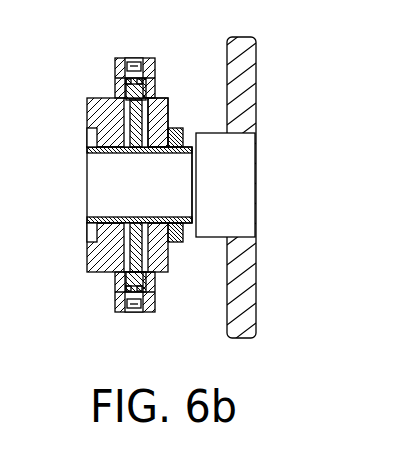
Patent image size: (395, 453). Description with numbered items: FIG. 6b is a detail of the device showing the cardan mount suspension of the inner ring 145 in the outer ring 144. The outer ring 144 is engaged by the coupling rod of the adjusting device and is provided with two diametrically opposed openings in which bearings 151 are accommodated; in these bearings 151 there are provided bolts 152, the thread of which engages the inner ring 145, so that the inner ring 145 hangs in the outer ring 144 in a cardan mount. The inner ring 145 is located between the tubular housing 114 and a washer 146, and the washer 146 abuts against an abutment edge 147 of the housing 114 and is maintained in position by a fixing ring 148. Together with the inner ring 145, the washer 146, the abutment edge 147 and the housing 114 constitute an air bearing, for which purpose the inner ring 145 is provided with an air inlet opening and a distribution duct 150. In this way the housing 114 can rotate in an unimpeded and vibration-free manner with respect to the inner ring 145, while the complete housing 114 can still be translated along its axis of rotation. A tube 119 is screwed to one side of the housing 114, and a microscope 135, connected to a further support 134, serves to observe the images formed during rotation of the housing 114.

The tubular housing 114 is at (110, 130).
The tube 119 is at (176, 153).
The further support 134 is at (241, 95).
The microscope 135 is at (241, 196).
The outer ring 144 is at (147, 62).
The inner ring 145 is at (93, 255).
The washer 146 is at (162, 115).
The abutment edge 147 is at (127, 162).
The fixing ring 148 is at (178, 130).
The distribution duct 150 is at (94, 110).
The bearings 151 is at (118, 64).
The bolts 152 is at (116, 73).